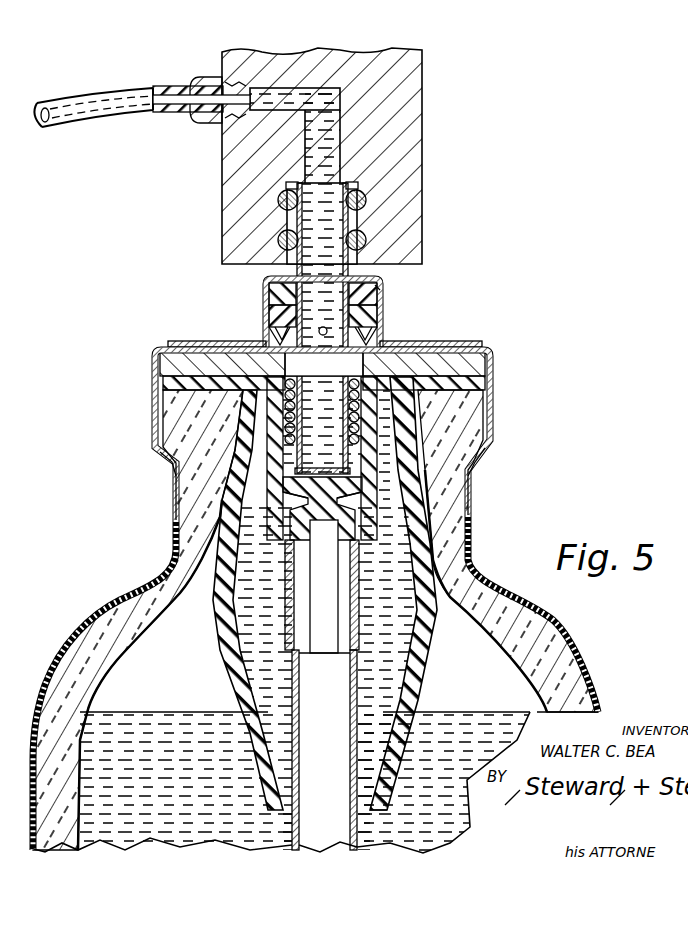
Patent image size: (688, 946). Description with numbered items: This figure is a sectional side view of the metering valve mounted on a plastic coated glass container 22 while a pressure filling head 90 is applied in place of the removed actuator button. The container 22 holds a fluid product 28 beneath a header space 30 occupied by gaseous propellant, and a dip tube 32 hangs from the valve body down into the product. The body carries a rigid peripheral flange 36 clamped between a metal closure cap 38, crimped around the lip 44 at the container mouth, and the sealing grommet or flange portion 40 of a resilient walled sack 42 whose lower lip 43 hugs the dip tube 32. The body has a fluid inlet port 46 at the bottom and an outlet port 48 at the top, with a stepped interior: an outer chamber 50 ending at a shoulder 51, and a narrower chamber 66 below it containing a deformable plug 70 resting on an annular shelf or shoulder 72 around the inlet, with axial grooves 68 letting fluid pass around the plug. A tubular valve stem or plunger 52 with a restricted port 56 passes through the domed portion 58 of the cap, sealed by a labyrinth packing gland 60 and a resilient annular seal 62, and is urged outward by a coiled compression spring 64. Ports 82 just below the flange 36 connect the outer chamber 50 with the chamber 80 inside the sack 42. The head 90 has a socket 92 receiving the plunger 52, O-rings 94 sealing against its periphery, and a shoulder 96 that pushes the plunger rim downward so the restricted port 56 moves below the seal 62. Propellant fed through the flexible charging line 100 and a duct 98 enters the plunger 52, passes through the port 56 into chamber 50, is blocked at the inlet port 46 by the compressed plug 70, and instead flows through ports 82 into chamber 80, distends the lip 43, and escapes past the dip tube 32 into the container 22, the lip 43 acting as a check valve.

The container 22 is at (561, 620).
The fluid product 28 is at (165, 722).
The header space 30 is at (148, 678).
The dip tube 32 is at (362, 684).
The peripheral flange 36 is at (175, 345).
The metal closure cap 38 is at (156, 398).
The sealing grommet or flange portion 40 is at (162, 371).
The resilient walled sack 42 is at (435, 632).
The lip 43 is at (382, 800).
The lip 44 is at (470, 440).
The fluid inlet port 46 is at (300, 649).
The outlet port 48 is at (382, 303).
The outer chamber 50 is at (263, 341).
The shoulder 51 is at (372, 448).
The tubular valve stem or plunger 52 is at (266, 284).
The restricted port 56 is at (372, 335).
The domed portion 58 is at (269, 287).
The labyrinth packing gland 60 is at (381, 290).
The resilient annular seal 62 is at (269, 316).
The coiled compression spring 64 is at (438, 347).
The chamber 66 is at (288, 486).
The grooves 68 is at (172, 468).
The plug 70 is at (302, 507).
The annular shelf or shoulder 72 is at (306, 533).
The chamber 80 is at (383, 625).
The ports 82 is at (235, 392).
The pressure filling head 90 is at (425, 103).
The socket 92 is at (350, 268).
The O-rings 94 is at (366, 241).
The shoulder 96 is at (353, 182).
The duct 98 is at (328, 100).
The flexible charging line 100 is at (75, 103).